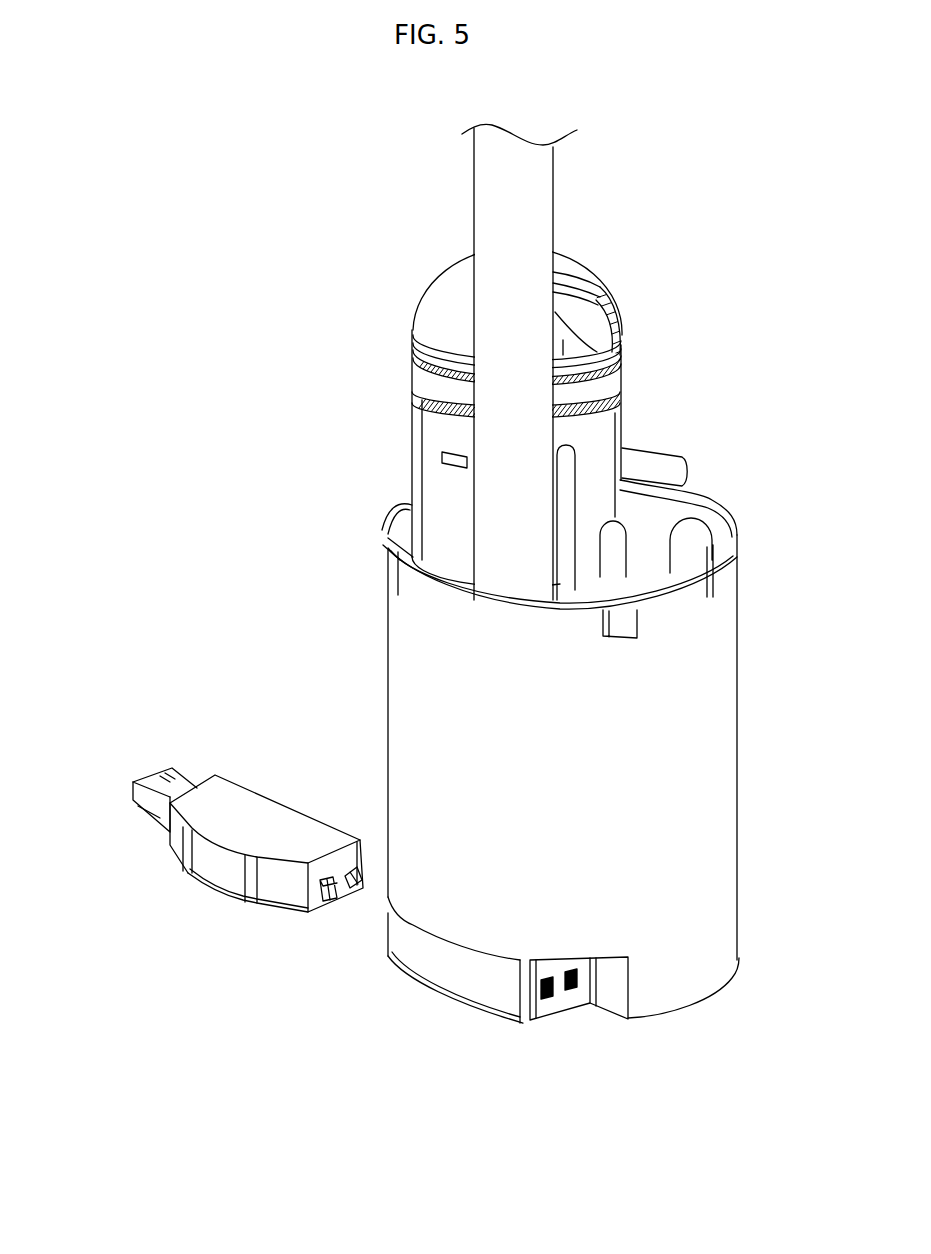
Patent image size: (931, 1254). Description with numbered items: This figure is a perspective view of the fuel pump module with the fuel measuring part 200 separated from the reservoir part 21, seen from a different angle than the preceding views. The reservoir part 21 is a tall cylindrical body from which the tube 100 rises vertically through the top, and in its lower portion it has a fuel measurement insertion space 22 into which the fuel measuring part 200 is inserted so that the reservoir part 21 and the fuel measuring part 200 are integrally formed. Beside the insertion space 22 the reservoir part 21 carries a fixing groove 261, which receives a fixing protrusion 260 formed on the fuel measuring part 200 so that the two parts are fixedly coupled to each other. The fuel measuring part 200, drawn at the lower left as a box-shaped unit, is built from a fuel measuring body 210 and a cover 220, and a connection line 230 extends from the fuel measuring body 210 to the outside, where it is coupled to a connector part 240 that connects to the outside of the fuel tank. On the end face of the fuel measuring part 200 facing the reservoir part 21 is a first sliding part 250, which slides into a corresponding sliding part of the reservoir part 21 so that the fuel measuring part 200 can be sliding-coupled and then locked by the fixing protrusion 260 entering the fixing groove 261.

The tube 100 is at (503, 218).
The reservoir part 21 is at (700, 737).
The fuel measurement insertion space 22 is at (478, 975).
The fixing groove 261 is at (552, 993).
The fuel measuring part 200 is at (206, 790).
The fuel measuring body 210 is at (253, 808).
The cover 220 is at (218, 884).
The connection line 230 is at (135, 780).
The connector part 240 is at (133, 800).
The first sliding part 250 is at (365, 885).
The fixing protrusion 260 is at (327, 905).